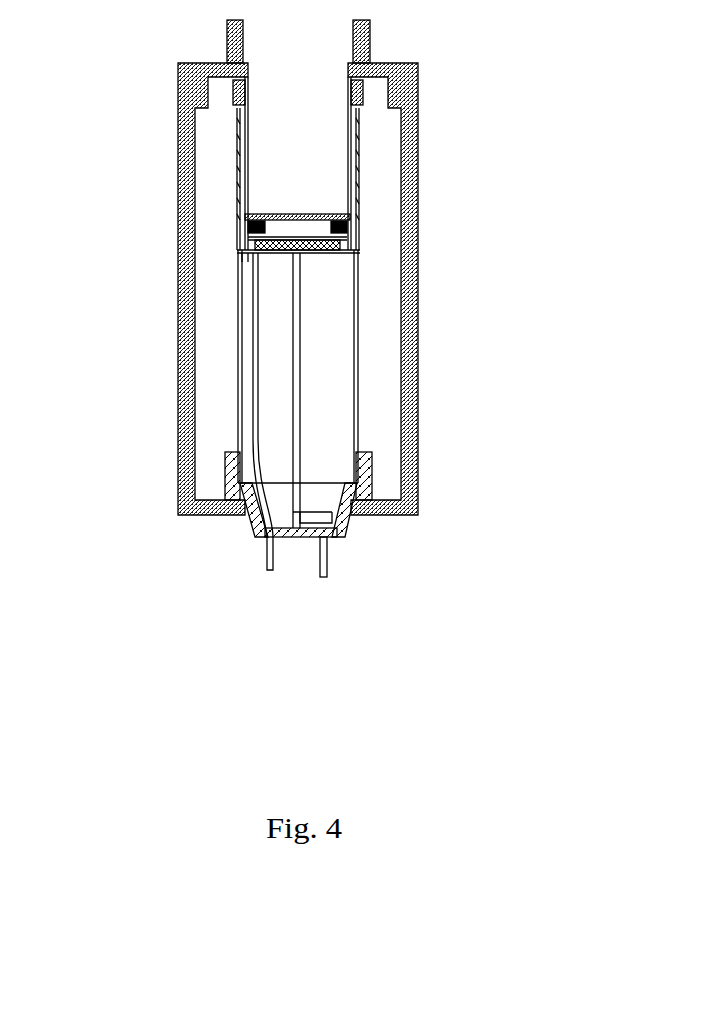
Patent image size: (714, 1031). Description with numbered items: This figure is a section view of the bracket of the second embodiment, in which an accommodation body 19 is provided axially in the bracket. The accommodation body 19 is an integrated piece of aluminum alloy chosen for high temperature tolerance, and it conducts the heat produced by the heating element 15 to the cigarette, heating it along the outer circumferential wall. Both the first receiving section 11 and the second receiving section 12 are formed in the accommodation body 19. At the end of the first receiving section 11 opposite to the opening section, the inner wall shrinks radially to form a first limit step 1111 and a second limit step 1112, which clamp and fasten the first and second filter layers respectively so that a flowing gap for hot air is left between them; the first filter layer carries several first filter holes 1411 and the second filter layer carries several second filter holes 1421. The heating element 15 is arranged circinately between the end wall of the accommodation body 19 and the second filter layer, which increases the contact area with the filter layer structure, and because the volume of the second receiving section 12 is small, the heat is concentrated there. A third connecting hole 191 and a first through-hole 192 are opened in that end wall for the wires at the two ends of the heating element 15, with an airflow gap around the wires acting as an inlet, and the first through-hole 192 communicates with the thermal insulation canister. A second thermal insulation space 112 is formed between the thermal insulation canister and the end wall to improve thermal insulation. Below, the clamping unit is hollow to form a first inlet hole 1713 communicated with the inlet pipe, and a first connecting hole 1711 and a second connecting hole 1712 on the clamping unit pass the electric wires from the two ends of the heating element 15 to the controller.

The first receiving section 11 is at (310, 85).
The accommodation body 19 is at (357, 148).
The first filter holes 1411 is at (262, 214).
The second filter holes 1421 is at (265, 233).
The first limit step 1111 is at (348, 222).
The second limit step 1112 is at (347, 235).
The heating element 15 is at (345, 236).
The second receiving section 12 is at (330, 241).
The third connecting hole 191 is at (250, 246).
The first through-hole 192 is at (292, 247).
The second thermal insulation space 112 is at (318, 328).
The first connecting hole 1711 is at (263, 537).
The second connecting hole 1712 is at (330, 540).
The first inlet hole 1713 is at (298, 537).